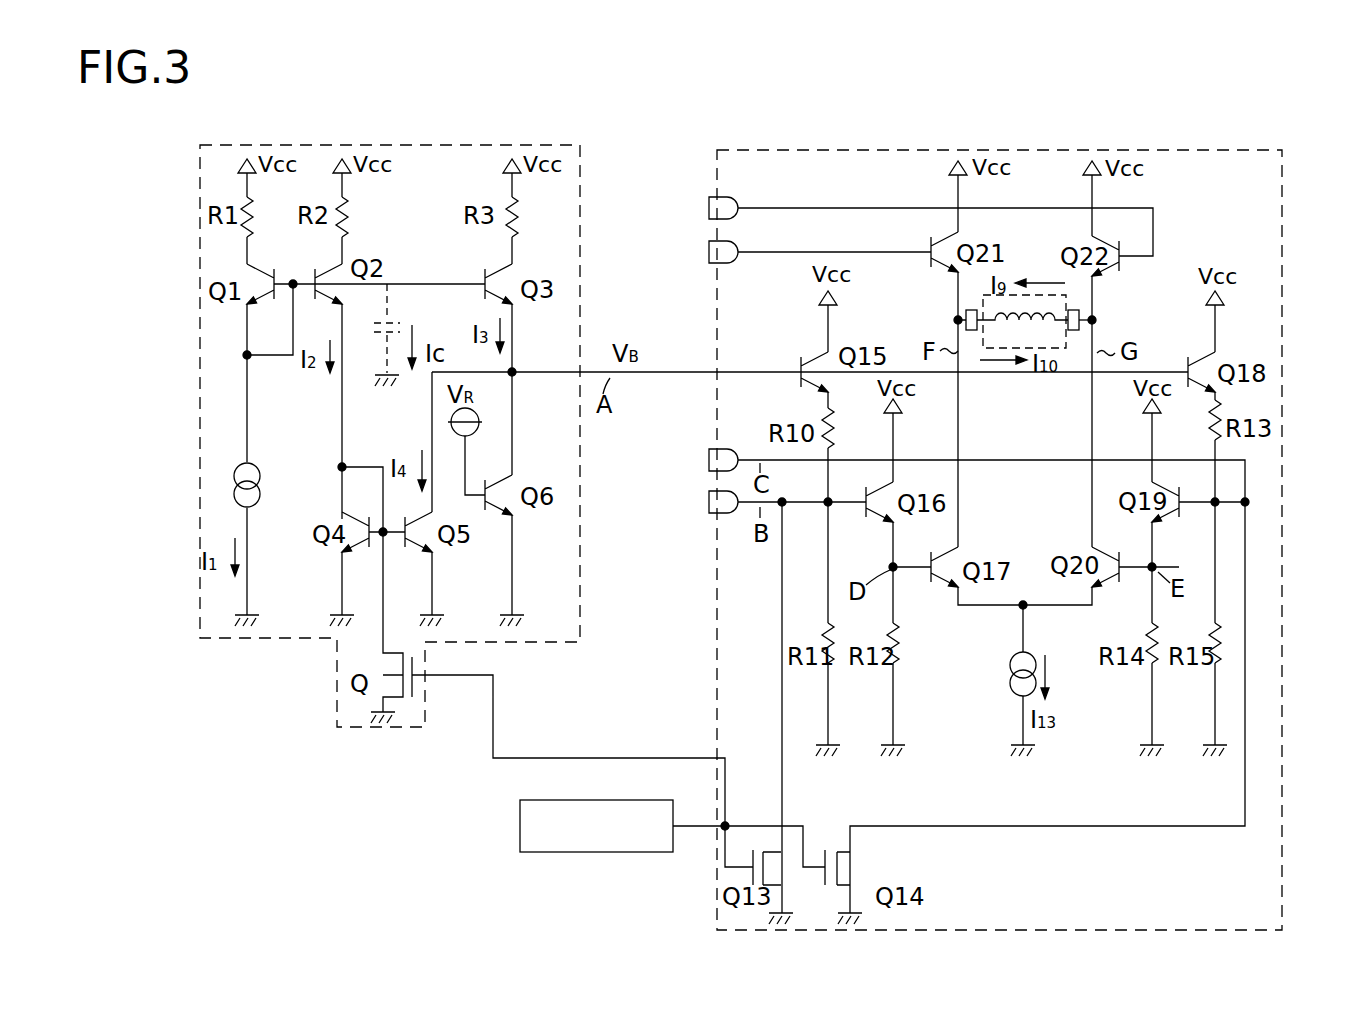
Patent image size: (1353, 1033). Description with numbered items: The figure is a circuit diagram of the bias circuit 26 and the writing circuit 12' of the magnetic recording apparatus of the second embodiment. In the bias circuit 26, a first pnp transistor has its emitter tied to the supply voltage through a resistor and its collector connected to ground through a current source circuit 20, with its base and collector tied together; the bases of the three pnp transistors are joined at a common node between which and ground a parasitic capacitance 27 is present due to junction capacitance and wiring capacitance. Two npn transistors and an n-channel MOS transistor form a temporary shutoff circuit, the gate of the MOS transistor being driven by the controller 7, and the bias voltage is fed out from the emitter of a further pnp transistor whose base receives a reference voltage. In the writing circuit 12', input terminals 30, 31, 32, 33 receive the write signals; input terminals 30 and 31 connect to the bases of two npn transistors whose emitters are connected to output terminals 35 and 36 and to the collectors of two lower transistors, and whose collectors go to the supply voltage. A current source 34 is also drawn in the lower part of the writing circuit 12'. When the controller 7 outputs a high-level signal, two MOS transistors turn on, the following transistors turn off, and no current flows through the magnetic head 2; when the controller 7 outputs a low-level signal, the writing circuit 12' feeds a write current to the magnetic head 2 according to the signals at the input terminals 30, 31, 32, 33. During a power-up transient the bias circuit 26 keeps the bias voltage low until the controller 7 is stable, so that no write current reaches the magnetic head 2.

The magnetic head 2 is at (1045, 295).
The controller 7 is at (588, 856).
The writing circuit 12' is at (1027, 540).
The current source circuit 20 is at (234, 471).
The bias circuit 26 is at (274, 640).
The parasitic capacitance 27 is at (398, 325).
The input terminal 30 is at (707, 207).
The input terminal 31 is at (707, 255).
The input terminal 32 is at (707, 458).
The input terminal 33 is at (707, 503).
The constant current source 34 is at (1011, 687).
The output terminal 35 is at (957, 311).
The output terminal 36 is at (1099, 306).